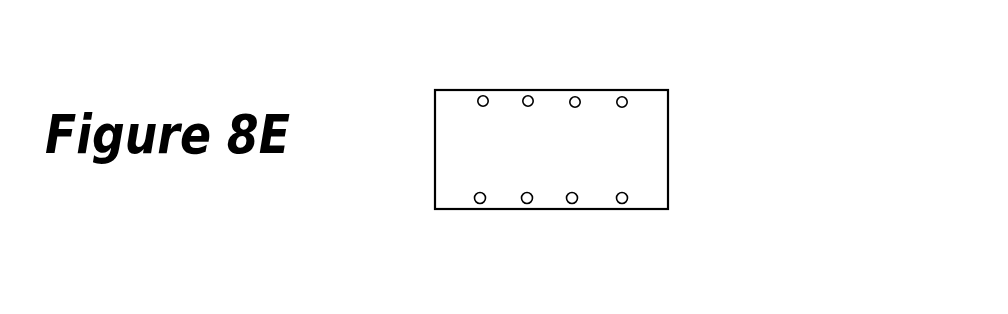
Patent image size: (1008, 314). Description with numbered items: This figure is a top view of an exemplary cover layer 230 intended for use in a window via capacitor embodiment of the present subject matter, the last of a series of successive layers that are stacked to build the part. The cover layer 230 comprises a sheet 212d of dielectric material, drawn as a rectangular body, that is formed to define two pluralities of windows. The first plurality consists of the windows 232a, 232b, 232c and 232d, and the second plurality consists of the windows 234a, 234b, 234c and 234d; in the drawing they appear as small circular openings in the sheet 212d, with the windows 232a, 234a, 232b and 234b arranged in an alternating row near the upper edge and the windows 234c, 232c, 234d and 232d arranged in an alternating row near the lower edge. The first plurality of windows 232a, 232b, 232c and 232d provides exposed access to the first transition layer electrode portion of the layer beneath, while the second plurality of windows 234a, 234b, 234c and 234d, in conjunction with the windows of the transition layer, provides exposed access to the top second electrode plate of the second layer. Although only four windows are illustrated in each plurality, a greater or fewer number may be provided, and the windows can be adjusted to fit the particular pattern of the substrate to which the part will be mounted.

The cover layer 230 is at (645, 139).
The sheet of dielectric material 212d is at (652, 108).
The window 232a is at (478, 101).
The window 234a is at (523, 100).
The window 232b is at (574, 98).
The window 234b is at (622, 98).
The window 234c is at (480, 204).
The window 232c is at (528, 204).
The window 234d is at (574, 204).
The window 232d is at (623, 204).